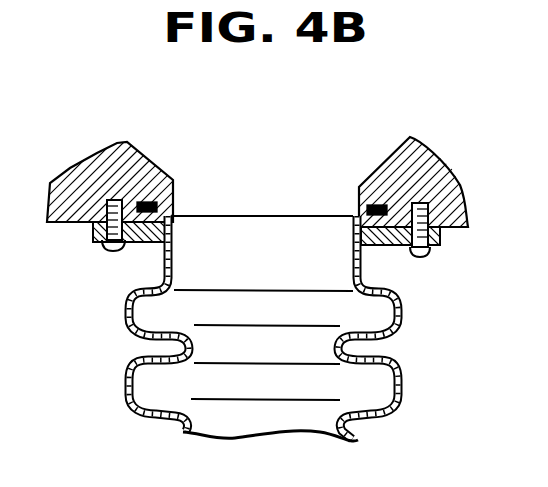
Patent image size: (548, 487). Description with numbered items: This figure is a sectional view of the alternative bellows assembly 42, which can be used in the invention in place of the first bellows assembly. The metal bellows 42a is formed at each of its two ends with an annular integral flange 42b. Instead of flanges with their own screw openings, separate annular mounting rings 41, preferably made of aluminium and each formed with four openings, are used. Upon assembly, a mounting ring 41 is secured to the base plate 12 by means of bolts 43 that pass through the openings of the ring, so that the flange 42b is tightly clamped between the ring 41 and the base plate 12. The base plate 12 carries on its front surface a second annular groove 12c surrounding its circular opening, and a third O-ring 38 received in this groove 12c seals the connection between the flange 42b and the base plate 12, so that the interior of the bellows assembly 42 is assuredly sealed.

The base plate 12 is at (403, 165).
The second annular groove 12c is at (375, 205).
The third O-ring 38 is at (147, 202).
The annular mounting ring 41 is at (443, 247).
The bellows assembly 42 is at (272, 294).
The metal bellows 42a is at (405, 381).
The annular integral flange 42b is at (172, 215).
The bolt 43 is at (110, 250).